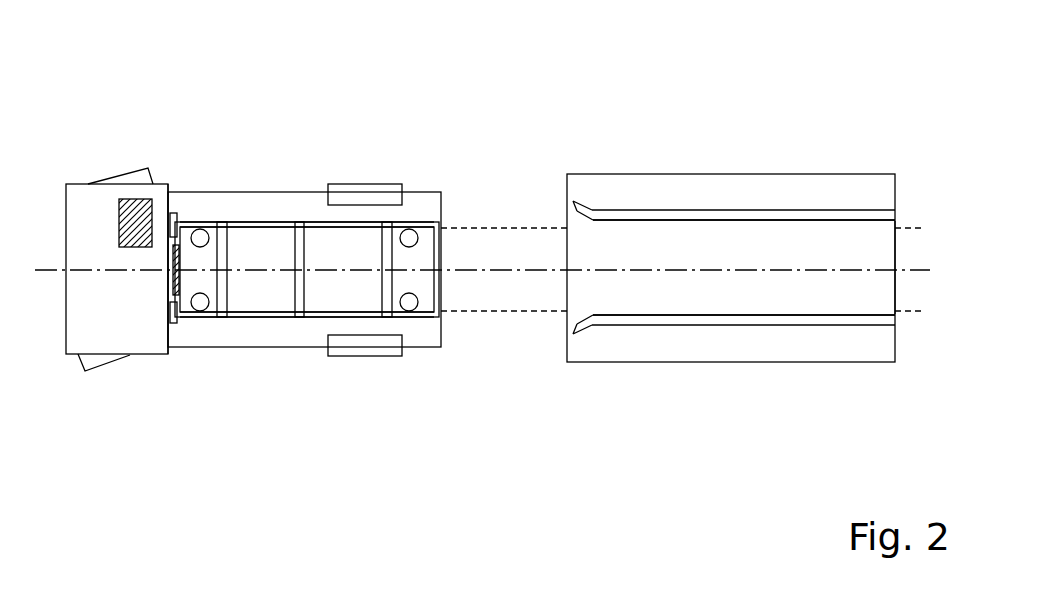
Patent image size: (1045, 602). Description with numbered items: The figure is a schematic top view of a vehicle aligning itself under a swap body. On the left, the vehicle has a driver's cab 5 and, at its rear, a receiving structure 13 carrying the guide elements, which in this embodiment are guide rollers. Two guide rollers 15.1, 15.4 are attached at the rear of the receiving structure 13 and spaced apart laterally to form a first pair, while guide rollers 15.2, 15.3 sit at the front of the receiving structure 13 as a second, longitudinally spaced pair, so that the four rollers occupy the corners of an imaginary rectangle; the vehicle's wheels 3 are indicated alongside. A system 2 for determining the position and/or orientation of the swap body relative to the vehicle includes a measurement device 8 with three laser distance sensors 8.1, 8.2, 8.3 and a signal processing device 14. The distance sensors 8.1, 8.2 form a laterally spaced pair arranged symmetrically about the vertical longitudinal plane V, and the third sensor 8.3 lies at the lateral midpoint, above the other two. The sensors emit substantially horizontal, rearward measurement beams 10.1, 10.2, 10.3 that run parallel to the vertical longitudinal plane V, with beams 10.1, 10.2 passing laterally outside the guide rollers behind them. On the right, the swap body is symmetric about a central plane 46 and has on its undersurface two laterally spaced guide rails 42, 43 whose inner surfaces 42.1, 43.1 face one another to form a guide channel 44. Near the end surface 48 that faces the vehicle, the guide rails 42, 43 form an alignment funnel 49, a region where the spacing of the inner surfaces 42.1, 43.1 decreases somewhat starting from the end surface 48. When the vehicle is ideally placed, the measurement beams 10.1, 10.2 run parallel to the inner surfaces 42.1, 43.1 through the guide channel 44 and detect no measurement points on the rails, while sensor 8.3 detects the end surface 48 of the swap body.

The system 2 is at (200, 157).
The wheels 3 is at (127, 178).
The driver's cab 5 is at (88, 200).
The measurement device 8 is at (163, 297).
The distance sensor 8.1 is at (174, 212).
The distance sensor 8.2 is at (173, 325).
The distance sensor 8.3 is at (178, 296).
The measurement beam 10.1 is at (282, 228).
The measurement beam 10.2 is at (252, 317).
The measurement beam 10.3 is at (327, 272).
The receiving structure 13 is at (285, 317).
The signal processing device 14 is at (130, 205).
The guide roller 15.1 is at (410, 312).
The guide roller 15.2 is at (201, 312).
The guide roller 15.3 is at (203, 231).
The guide roller 15.4 is at (408, 232).
The guide rail 42 is at (722, 208).
The inner surface 42.1 is at (783, 225).
The guide rail 43 is at (745, 326).
The inner surface 43.1 is at (867, 313).
The guide channel 44 is at (860, 249).
The central plane 46 is at (655, 269).
The end surface 48 is at (563, 252).
The alignment funnel 49 is at (587, 197).
The vertical longitudinal plane V is at (47, 272).